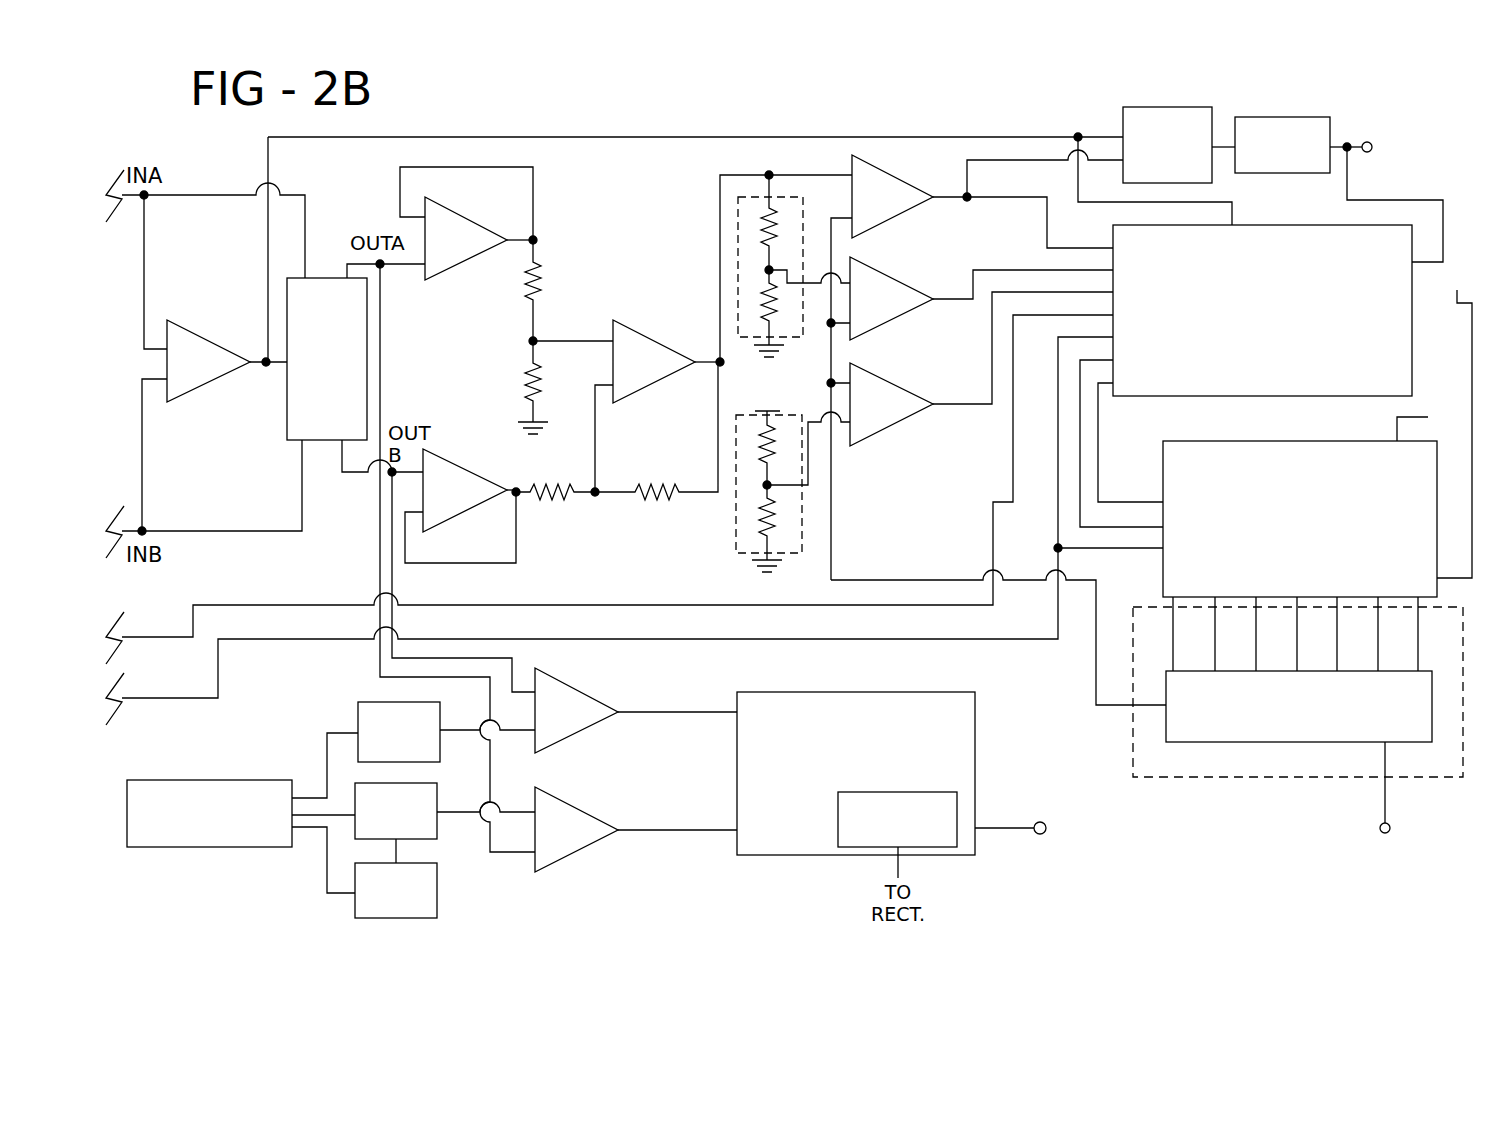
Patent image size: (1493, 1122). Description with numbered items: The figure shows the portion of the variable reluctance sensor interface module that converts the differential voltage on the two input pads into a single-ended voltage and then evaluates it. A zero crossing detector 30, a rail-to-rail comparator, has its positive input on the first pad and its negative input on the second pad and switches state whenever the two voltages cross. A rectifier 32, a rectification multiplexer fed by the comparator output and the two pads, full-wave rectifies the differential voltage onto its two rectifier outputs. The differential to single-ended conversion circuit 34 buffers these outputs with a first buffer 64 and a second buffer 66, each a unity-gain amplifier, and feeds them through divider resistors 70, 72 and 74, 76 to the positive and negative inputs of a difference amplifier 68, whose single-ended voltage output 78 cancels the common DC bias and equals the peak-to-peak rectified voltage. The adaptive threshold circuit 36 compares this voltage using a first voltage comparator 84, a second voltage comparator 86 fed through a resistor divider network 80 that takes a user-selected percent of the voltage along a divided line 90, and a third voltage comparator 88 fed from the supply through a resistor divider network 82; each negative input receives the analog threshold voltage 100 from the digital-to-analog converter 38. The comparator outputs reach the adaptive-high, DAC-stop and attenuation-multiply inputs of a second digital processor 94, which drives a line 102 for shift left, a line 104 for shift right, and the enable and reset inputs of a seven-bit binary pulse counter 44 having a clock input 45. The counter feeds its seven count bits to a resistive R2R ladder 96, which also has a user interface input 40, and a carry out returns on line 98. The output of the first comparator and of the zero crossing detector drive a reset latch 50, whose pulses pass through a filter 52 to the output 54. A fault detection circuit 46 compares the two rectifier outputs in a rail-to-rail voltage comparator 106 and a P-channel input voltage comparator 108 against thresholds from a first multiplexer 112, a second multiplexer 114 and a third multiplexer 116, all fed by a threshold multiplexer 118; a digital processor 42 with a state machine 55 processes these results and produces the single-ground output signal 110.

The zero crossing detector 30 is at (203, 333).
The rectifier 32 is at (330, 278).
The differential to single-ended conversion circuit 34 is at (620, 168).
The adaptive threshold circuit 36 is at (876, 125).
The digital-to-analog converter 38 is at (1278, 777).
The user interface input 40 is at (1391, 828).
The digital processor 42 is at (875, 692).
The 7-bit binary pulse counter 44 is at (1320, 441).
The clock input 45 is at (1440, 410).
The fault detection circuit 46 is at (552, 888).
The reset latch 50 is at (1155, 107).
The filter 52 is at (1297, 117).
The output 54 is at (1367, 142).
The state machine 55 is at (950, 792).
The first buffer 64 is at (463, 213).
The second buffer 66 is at (465, 470).
The difference amplifier 68 is at (635, 332).
The divider resistor 70 is at (525, 287).
The divider resistor 72 is at (533, 392).
The divider resistor 74 is at (560, 495).
The divider resistor 76 is at (655, 490).
The single-ended voltage output 78 is at (718, 340).
The resistor divider network 80 is at (738, 248).
The resistor divider network 82 is at (736, 522).
The first voltage comparator 84 is at (895, 178).
The second voltage comparator 86 is at (895, 280).
The third voltage comparator 88 is at (895, 385).
The reference line 90 is at (817, 283).
The second digital processor 94 is at (1323, 225).
The resistive R2R ladder 96 is at (1166, 722).
The line 98 is at (1457, 290).
The analog threshold voltage 100 is at (998, 606).
The line 102 is at (175, 637).
The line 104 is at (162, 698).
The rail-to-rail voltage comparator 106 is at (580, 810).
The P-channel input voltage comparator 108 is at (580, 700).
The output signal SNGLND 110 is at (1040, 836).
The first multiplexer 112 is at (355, 795).
The second multiplexer 114 is at (437, 885).
The third multiplexer 116 is at (358, 715).
The threshold multiplexer 118 is at (213, 780).